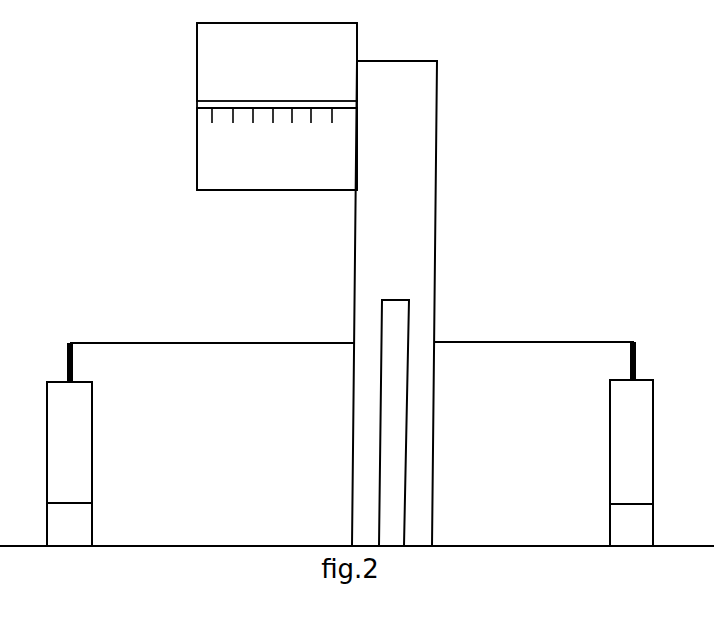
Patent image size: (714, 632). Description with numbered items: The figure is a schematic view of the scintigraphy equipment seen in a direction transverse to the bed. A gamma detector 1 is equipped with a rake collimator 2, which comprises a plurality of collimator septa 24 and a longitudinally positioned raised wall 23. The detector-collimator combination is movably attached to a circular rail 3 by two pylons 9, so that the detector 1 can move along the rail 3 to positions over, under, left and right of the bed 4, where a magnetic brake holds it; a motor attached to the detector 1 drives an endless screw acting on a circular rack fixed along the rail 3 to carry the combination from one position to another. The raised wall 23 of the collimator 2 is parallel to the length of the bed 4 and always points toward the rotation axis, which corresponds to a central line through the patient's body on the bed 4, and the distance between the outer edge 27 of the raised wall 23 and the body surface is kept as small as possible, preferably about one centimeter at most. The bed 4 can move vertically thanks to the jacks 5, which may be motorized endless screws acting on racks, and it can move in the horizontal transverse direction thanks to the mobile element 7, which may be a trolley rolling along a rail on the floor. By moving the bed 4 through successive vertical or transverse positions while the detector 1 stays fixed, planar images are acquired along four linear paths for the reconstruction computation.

The gamma detector 1 is at (277, 62).
The rake collimator 2 is at (190, 168).
The circular rail 3 is at (394, 303).
The bed 4 is at (258, 343).
The jack 5 is at (648, 482).
The mobile element 7 is at (350, 524).
The pylon 9 is at (394, 423).
The raised wall 23 is at (277, 149).
The collimator septa 24 is at (211, 118).
The outer edge of the raised wall 27 is at (270, 191).